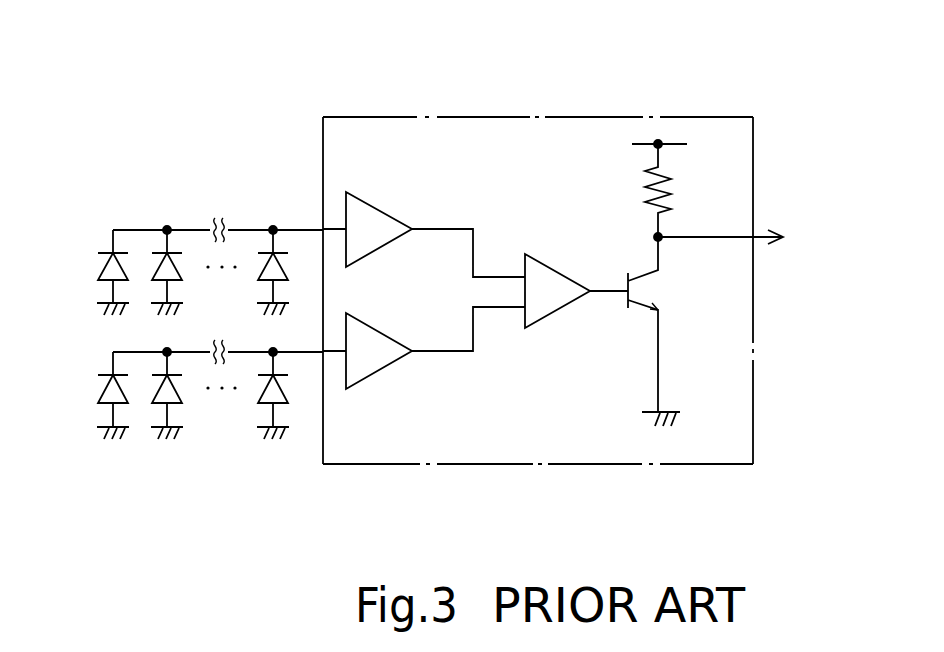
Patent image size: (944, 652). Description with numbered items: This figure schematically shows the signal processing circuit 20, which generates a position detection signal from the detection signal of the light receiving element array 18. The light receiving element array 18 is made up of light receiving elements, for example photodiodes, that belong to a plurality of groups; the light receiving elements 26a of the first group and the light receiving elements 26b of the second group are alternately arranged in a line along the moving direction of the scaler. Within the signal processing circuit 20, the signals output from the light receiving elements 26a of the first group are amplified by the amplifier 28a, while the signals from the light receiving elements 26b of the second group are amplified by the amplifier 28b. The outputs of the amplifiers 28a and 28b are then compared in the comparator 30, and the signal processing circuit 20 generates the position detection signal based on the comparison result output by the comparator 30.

The light receiving element array 18 is at (188, 112).
The signal processing circuit 20 is at (518, 117).
The light receiving elements of the first group 26a is at (100, 405).
The light receiving elements of the second group 26b is at (100, 272).
The amplifier 28a is at (422, 322).
The amplifier 28b is at (375, 203).
The comparator 30 is at (547, 258).